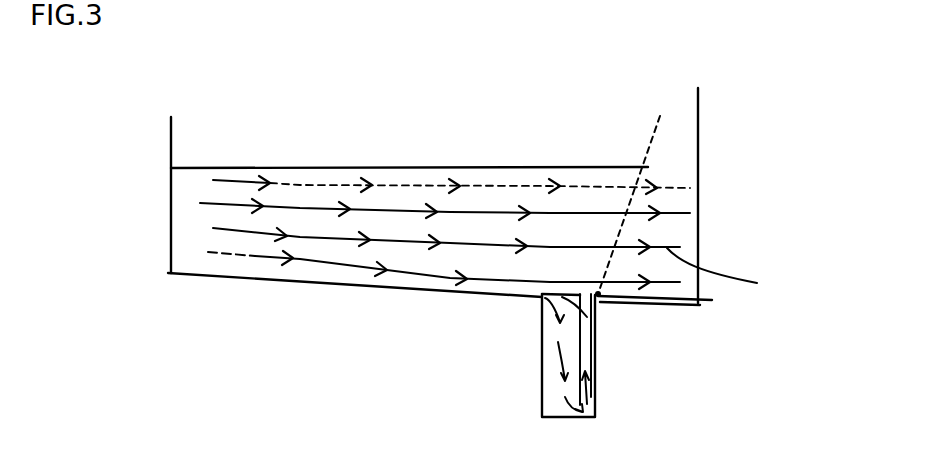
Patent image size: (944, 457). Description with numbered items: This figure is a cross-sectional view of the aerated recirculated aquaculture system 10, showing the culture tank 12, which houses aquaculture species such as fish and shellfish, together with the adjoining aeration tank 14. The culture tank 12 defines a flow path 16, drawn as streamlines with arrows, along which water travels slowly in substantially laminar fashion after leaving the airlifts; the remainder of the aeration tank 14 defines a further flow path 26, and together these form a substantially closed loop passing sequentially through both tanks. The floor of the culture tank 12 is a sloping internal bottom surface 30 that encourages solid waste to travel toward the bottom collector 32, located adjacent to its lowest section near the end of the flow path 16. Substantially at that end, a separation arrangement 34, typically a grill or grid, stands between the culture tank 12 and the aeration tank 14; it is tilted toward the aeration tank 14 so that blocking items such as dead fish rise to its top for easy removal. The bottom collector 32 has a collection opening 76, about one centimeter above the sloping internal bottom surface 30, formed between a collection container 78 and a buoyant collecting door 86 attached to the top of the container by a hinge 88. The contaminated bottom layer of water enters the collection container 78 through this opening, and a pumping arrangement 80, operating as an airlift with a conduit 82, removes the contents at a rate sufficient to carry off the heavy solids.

The aerated recirculated aquaculture system 10 is at (316, 89).
The culture tank 12 is at (170, 223).
The aeration tank 14 is at (698, 228).
The flow path 16 is at (307, 182).
The flow path 26 is at (731, 273).
The sloping internal bottom surface 30 is at (295, 283).
The bottom collector 32 is at (542, 342).
The separation arrangement 34 is at (648, 148).
The collection opening 76 is at (540, 298).
The collection container 78 is at (542, 391).
The pumping arrangement 80 is at (592, 345).
The conduit 82 is at (592, 367).
The collecting door 86 is at (595, 320).
The hinge 88 is at (600, 298).